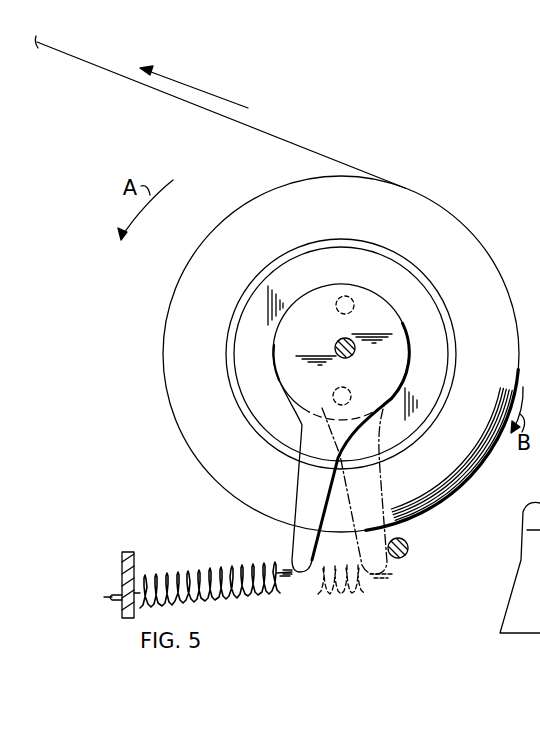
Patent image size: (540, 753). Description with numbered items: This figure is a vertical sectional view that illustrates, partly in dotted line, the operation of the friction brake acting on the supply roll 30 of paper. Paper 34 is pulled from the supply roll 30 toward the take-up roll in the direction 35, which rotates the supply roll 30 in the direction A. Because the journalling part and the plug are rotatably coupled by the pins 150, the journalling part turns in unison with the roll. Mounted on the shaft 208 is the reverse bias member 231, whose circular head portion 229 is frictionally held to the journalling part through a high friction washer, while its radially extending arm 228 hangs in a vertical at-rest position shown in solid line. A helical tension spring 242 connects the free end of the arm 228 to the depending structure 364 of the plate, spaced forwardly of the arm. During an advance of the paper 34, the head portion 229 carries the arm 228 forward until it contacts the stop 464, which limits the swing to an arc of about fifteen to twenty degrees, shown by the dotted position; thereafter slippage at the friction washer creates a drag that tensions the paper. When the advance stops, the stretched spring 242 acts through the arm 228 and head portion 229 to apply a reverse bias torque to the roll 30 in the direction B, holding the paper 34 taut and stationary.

The supply roll 30 is at (467, 187).
The paper 34 is at (329, 156).
The direction of paper movement 35 is at (224, 98).
The pins 150 is at (350, 297).
The shaft 208 is at (337, 342).
The arm 228 is at (302, 480).
The circular head portion 229 is at (400, 346).
The reverse bias member 231 is at (393, 373).
The spring 242 is at (278, 596).
The depending structure 364 is at (140, 568).
The stop 464 is at (408, 548).